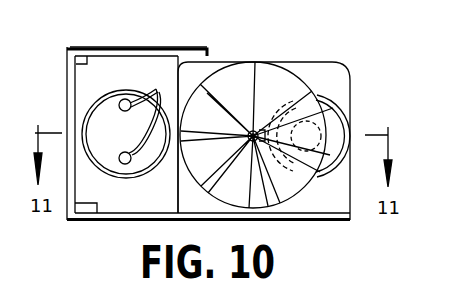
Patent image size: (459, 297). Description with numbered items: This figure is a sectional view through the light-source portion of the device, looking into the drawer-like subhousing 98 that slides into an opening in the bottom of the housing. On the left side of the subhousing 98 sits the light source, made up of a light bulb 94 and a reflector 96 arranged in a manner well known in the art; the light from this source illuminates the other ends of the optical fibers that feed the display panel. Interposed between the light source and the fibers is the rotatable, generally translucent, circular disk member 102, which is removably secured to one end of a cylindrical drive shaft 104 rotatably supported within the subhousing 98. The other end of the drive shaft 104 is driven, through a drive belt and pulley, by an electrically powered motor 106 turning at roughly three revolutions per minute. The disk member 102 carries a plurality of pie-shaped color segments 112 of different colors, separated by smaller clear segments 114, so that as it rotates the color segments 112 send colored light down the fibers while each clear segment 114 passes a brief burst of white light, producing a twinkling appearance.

The light bulb 94 is at (344, 113).
The reflector 96 is at (337, 112).
The subhousing 98 is at (193, 52).
The disk member 102 is at (272, 90).
The drive shaft 104 is at (270, 206).
The motor 106 is at (113, 88).
The color segments 112 is at (278, 82).
The clear segments 114 is at (258, 80).